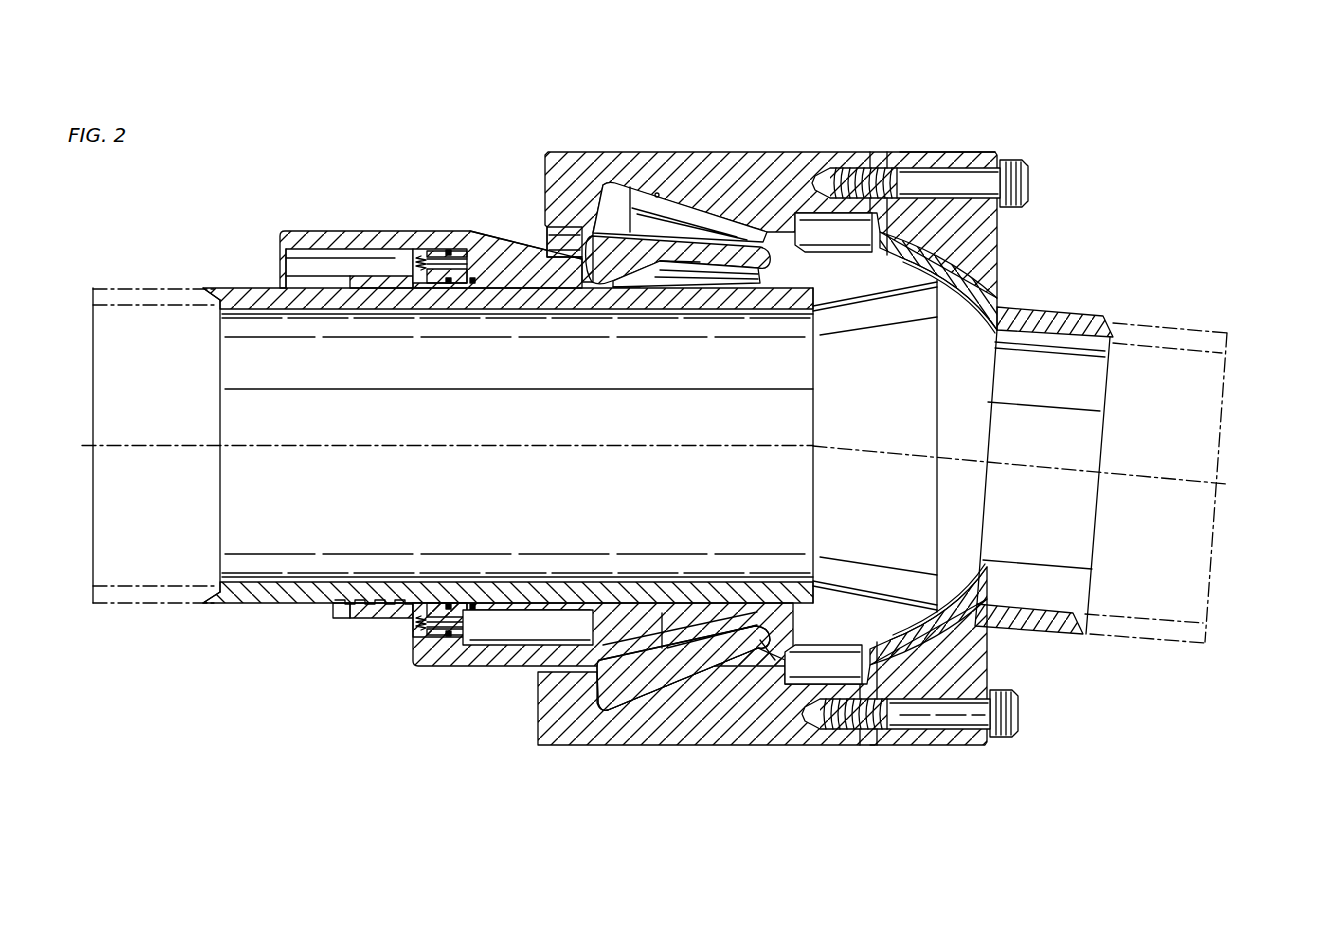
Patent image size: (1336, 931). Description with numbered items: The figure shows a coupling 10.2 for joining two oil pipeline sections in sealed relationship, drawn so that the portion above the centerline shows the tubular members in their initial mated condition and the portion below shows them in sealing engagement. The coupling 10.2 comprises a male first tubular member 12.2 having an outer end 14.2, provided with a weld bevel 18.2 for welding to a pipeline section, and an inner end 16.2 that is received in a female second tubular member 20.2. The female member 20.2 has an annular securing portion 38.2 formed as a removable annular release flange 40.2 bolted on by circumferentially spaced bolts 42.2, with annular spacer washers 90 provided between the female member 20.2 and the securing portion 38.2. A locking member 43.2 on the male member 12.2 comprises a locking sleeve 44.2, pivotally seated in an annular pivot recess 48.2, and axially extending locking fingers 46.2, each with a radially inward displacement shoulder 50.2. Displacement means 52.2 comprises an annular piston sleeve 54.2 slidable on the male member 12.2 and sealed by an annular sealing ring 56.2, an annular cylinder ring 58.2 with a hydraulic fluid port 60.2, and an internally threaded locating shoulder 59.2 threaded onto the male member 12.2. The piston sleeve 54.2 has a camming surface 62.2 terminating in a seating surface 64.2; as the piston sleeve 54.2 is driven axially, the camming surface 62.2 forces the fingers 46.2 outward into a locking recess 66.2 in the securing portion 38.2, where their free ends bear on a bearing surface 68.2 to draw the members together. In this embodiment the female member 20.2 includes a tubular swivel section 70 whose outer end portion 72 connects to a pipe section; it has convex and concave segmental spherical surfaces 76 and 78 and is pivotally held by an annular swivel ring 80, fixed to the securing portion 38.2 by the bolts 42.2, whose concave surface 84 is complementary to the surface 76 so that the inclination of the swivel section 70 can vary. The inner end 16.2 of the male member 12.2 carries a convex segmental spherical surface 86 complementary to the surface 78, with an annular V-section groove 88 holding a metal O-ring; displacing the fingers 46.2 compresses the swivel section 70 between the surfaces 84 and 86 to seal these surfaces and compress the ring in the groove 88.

The coupling 10.2 is at (1212, 234).
The first tubular member 12.2 is at (258, 592).
The outer end 14.2 is at (215, 540).
The inner end 16.2 is at (849, 580).
The weld bevel 18.2 is at (220, 288).
The second tubular member 20.2 is at (995, 138).
The annular securing portion 38.2 is at (843, 150).
The removable annular release flange 40.2 is at (575, 152).
The bolts 42.2 is at (1030, 170).
The locking member 43.2 is at (699, 218).
The locking sleeve 44.2 is at (770, 270).
The locking fingers 46.2 is at (707, 265).
The annular pivot recess 48.2 is at (775, 660).
The displacement shoulder 50.2 is at (617, 290).
The displacement means 52.2 is at (332, 230).
The annular piston sleeve 54.2 is at (290, 231).
The annular sealing ring 56.2 is at (510, 670).
The annular cylinder ring 58.2 is at (407, 645).
The internally threaded locating shoulder 59.2 is at (360, 620).
The hydraulic fluid port 60.2 is at (400, 249).
The camming surface 62.2 is at (545, 230).
The seating surface 64.2 is at (462, 249).
The locking recess 66.2 is at (662, 190).
The bearing surface 68.2 is at (618, 183).
The tubular swivel section 70 is at (1062, 312).
The outer end portion 72 is at (1113, 390).
The convex segmental spherical surface 76 is at (1000, 252).
The concave segmental spherical surface 78 is at (982, 325).
The annular swivel ring 80 is at (999, 223).
The concave segmental spherical surface 84 is at (923, 690).
The convex segmental spherical surface 86 is at (878, 558).
The annular V-section groove 88 is at (925, 290).
The annular spacer washers 90 is at (870, 747).